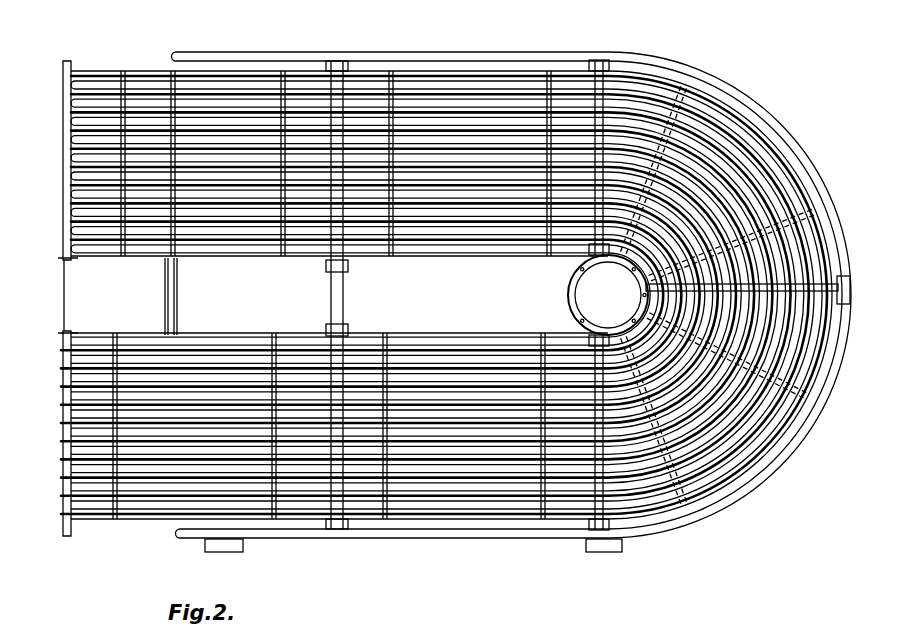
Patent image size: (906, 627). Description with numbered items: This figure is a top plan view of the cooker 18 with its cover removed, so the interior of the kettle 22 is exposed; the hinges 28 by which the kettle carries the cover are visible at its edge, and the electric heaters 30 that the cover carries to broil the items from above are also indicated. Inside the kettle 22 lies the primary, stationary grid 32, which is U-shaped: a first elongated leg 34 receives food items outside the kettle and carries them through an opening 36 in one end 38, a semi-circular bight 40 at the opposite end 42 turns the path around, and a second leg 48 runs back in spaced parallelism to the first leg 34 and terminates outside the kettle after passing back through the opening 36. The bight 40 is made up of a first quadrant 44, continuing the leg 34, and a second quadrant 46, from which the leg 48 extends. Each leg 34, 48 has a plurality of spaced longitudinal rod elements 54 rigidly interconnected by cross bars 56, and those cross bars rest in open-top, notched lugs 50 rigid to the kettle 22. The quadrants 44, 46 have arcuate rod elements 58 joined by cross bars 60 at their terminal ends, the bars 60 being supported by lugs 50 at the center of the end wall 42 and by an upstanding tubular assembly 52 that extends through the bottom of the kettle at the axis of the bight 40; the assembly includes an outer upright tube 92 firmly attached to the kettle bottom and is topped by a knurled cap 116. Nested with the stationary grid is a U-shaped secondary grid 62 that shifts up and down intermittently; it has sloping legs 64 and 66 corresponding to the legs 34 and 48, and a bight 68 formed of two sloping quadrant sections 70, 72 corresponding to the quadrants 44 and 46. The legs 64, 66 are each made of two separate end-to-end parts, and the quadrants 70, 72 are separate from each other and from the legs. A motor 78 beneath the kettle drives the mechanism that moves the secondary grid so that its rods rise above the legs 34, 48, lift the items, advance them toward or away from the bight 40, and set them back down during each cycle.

The cooker 18 is at (444, 322).
The kettle 22 is at (348, 533).
The hinges 28 is at (206, 546).
The electric heaters 30 is at (430, 514).
The primary stationary grid 32 is at (88, 63).
The first elongated leg 34 is at (53, 445).
The opening 36 is at (168, 326).
The end of kettle 38 is at (168, 530).
The semi-circular bight 40 is at (770, 432).
The opposite end 42 is at (801, 412).
The first quadrant 44 is at (712, 500).
The second quadrant 46 is at (729, 288).
The second leg 48 is at (56, 140).
The notched lugs 50 is at (337, 56).
The upstanding tubular assembly 52 is at (566, 292).
The longitudinal rod elements 54 is at (218, 62).
The cross bars 56 is at (585, 52).
The arcuate rod elements 58 is at (728, 95).
The cross bars 60 is at (797, 236).
The secondary grid 62 is at (137, 73).
The sloping leg 64 is at (220, 328).
The sloping leg 66 is at (140, 252).
The bight 68 is at (792, 378).
The sloping quadrant section 70 is at (746, 458).
The sloping quadrant section 72 is at (780, 148).
The motor 78 is at (56, 290).
The outer upright tube 92 is at (572, 305).
The knurled cap 116 is at (582, 266).